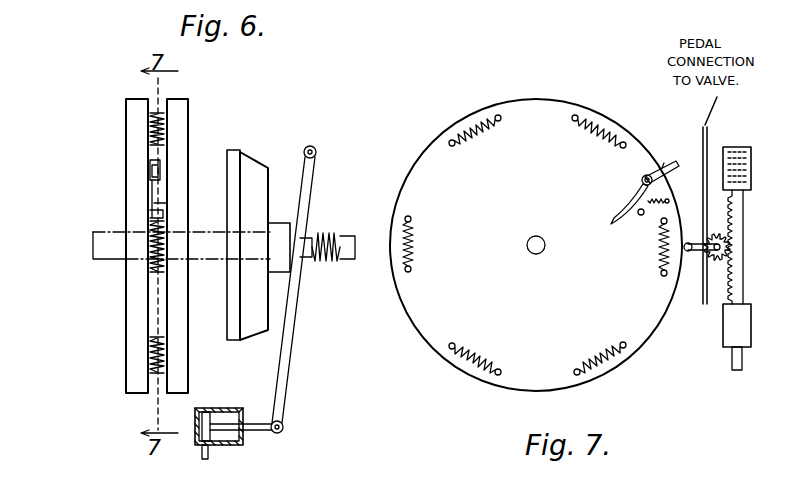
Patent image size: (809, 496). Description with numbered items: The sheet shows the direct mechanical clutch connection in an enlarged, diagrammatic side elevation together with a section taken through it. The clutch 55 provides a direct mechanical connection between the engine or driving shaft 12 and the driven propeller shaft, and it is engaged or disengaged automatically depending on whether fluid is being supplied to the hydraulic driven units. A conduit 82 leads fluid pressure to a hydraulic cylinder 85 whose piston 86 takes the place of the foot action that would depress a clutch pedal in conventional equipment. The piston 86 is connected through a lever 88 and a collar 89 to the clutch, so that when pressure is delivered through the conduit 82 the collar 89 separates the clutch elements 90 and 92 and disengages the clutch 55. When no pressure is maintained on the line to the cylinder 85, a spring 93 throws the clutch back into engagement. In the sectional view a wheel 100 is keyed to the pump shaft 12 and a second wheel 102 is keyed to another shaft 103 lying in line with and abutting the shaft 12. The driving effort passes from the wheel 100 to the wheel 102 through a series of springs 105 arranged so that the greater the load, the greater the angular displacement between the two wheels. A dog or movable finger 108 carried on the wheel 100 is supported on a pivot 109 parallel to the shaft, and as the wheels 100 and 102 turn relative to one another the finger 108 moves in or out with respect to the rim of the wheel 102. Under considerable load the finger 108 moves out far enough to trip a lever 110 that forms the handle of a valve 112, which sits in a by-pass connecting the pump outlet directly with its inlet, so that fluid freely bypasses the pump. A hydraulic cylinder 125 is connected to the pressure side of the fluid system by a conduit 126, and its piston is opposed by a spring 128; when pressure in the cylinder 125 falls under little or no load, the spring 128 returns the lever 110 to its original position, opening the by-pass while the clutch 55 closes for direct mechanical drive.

In FIG. 6, the driving shaft 12 is at (104, 254).
In FIG. 6, the clutch 55 is at (241, 224).
In FIG. 6, the conduit 82 is at (204, 452).
In FIG. 6, the hydraulic cylinder 85 is at (238, 446).
In FIG. 6, the piston 86 is at (215, 408).
In FIG. 6, the lever 88 is at (284, 427).
In FIG. 6, the collar 89 is at (308, 232).
In FIG. 6, the clutch element 90 is at (233, 186).
In FIG. 6, the clutch element 92 is at (268, 170).
In FIG. 6, the spring 93 is at (327, 268).
In FIG. 6, the wheel 100 is at (128, 128).
In FIG. 7, the wheel 100 is at (559, 101).
In FIG. 6, the wheel 102 is at (189, 104).
In FIG. 6, the shaft 103 is at (203, 252).
In FIG. 6, the springs 105 is at (150, 120).
In FIG. 7, the springs 105 is at (478, 122).
In FIG. 6, the dog 108 is at (150, 164).
In FIG. 7, the dog 108 is at (664, 168).
In FIG. 6, the pivot 109 is at (150, 182).
In FIG. 7, the pivot 109 is at (642, 181).
In FIG. 7, the lever 110 is at (688, 242).
In FIG. 7, the valve 112 is at (711, 263).
In FIG. 7, the hydraulic cylinder 125 is at (723, 330).
In FIG. 7, the conduit 126 is at (734, 362).
In FIG. 7, the spring 128 is at (748, 130).